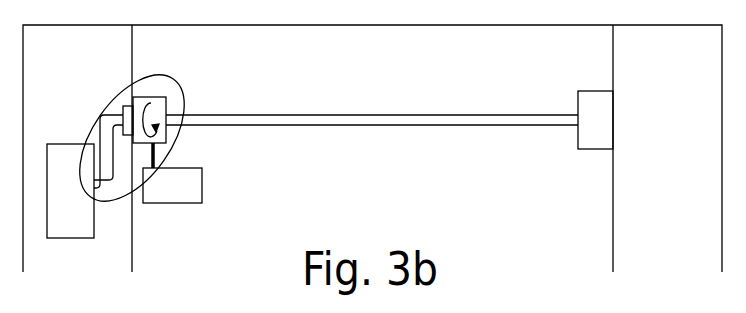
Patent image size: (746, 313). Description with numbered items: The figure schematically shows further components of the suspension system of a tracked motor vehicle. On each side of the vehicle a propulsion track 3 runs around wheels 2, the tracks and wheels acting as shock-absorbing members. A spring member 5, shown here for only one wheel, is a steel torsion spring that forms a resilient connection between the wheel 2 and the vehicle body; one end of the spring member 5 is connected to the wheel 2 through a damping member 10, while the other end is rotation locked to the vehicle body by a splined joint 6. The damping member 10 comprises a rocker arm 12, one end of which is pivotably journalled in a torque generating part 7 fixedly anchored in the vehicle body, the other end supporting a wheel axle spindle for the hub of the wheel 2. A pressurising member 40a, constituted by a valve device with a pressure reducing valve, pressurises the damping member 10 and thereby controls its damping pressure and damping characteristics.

The propulsion track 3 is at (72, 76).
The wheel 2 is at (65, 202).
The rocker arm 12 is at (100, 120).
The torque generating part 7 is at (155, 97).
The damping member 10 is at (183, 89).
The spring member 5 is at (336, 115).
The splined joint 6 is at (593, 91).
The pressurising member 40a is at (153, 195).